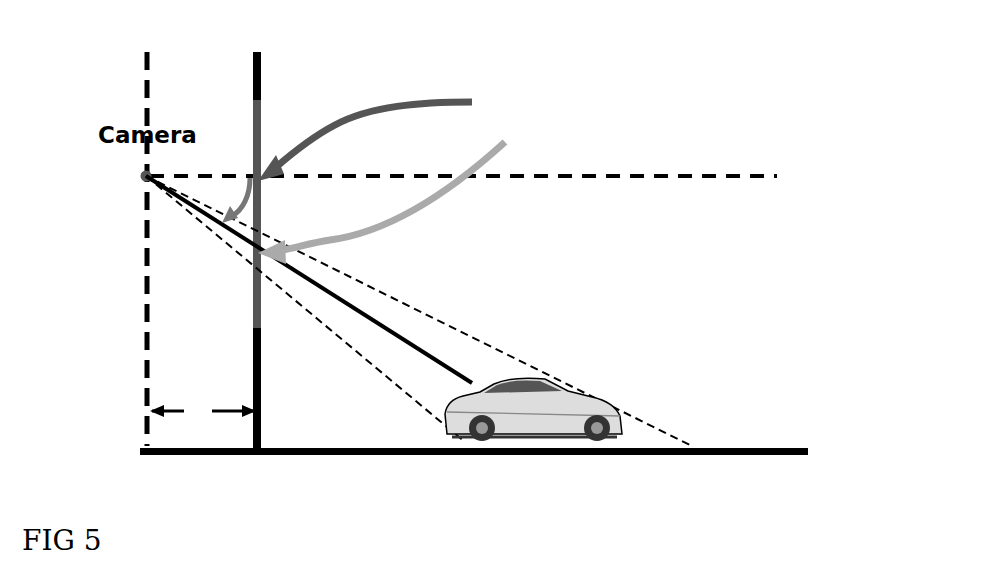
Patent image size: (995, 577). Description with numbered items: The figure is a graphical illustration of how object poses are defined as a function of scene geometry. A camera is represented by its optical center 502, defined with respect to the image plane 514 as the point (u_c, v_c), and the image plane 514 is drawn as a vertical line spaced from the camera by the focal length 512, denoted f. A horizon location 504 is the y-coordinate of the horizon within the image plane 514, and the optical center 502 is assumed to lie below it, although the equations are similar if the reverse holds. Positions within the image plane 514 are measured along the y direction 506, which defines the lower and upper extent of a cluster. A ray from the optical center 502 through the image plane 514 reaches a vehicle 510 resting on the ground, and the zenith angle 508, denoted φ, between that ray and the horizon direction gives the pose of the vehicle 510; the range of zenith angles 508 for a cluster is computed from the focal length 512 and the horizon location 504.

The optical center 502 is at (143, 183).
The horizon location v_0 504 is at (388, 136).
The y direction 506 is at (258, 388).
The zenith angle φ 508 is at (237, 196).
The vehicle 510 is at (578, 410).
The focal length f 512 is at (208, 421).
The image plane 514 is at (405, 198).